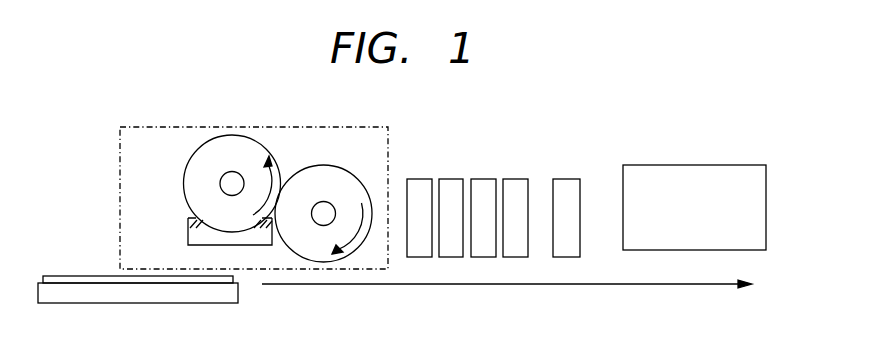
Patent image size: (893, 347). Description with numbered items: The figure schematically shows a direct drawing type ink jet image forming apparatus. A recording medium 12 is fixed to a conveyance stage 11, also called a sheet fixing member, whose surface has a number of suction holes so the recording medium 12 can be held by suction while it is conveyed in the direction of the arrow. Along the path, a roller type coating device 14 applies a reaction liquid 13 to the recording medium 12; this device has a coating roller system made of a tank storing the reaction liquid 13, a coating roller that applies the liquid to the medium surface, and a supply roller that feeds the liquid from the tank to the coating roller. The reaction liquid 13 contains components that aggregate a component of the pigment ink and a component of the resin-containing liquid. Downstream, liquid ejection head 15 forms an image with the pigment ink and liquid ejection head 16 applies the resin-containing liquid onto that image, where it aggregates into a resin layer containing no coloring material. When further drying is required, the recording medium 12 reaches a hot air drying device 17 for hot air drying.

The conveyance stage 11 is at (238, 296).
The recording medium 12 is at (97, 277).
The reaction liquid 13 is at (190, 233).
The roller type coating device 14 is at (170, 135).
The liquid ejection head 15 is at (529, 164).
The liquid ejection head 16 is at (582, 164).
The hot air drying device 17 is at (699, 175).